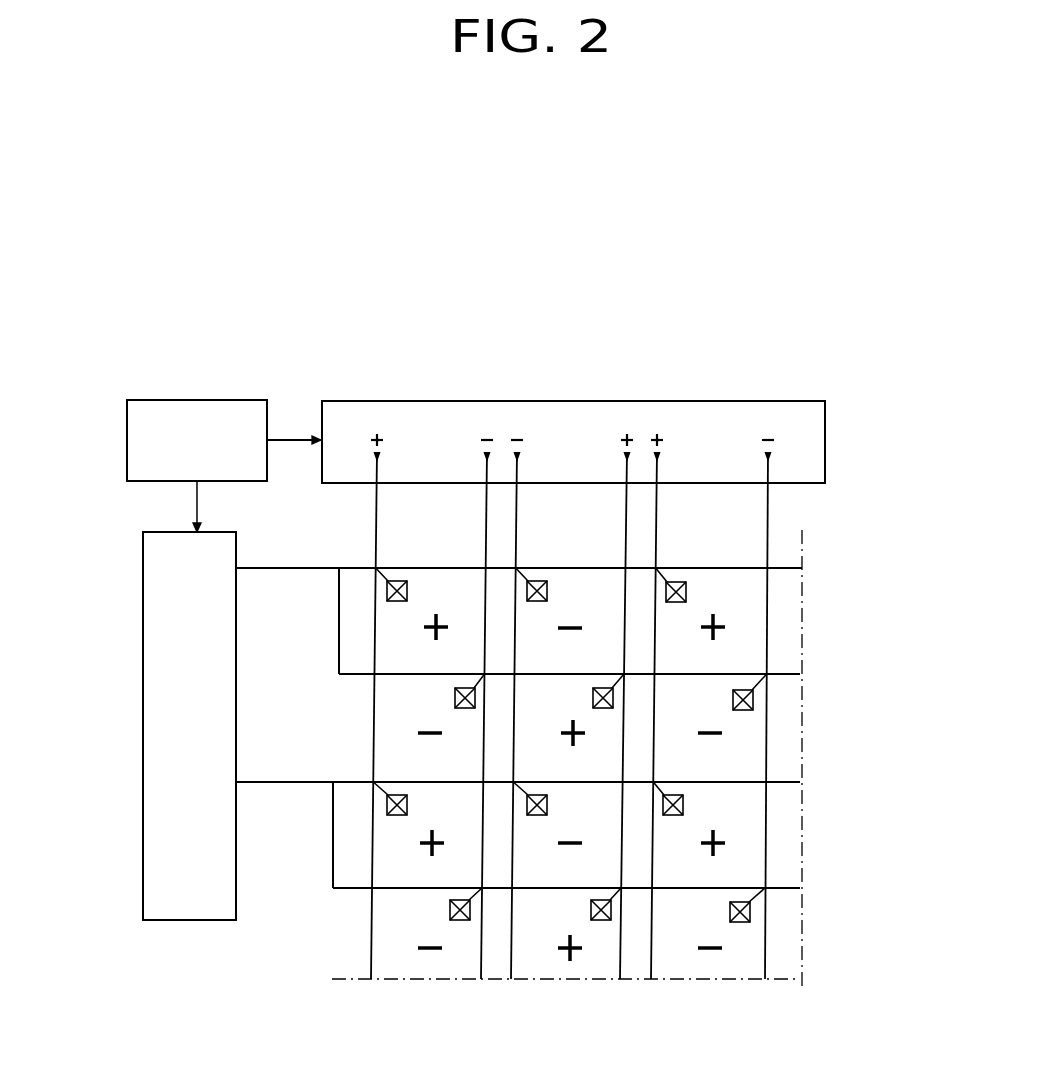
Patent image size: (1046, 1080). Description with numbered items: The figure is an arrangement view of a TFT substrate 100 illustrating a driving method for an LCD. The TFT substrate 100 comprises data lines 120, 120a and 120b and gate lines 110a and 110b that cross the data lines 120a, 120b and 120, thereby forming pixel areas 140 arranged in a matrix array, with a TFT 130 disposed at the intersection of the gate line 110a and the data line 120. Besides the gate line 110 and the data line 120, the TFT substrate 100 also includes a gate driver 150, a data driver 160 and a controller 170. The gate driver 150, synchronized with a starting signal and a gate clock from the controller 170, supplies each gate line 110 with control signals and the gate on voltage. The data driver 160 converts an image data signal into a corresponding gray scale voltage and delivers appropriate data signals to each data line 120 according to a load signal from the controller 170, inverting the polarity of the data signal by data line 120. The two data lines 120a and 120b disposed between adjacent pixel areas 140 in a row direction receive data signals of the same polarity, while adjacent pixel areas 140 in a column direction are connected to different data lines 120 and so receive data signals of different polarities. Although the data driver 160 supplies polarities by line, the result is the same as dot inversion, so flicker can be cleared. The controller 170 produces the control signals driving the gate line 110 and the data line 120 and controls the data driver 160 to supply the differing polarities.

The TFT substrate 100 is at (710, 286).
The gate line 110 is at (276, 570).
The gate line 110a is at (350, 567).
The gate line 110b is at (341, 676).
The data line 120 is at (620, 978).
The data line 120a is at (371, 978).
The data line 120b is at (481, 978).
The TFT 130 is at (755, 697).
The pixel area 140 is at (750, 857).
The gate driver 150 is at (144, 726).
The data driver 160 is at (568, 400).
The controller 170 is at (224, 427).